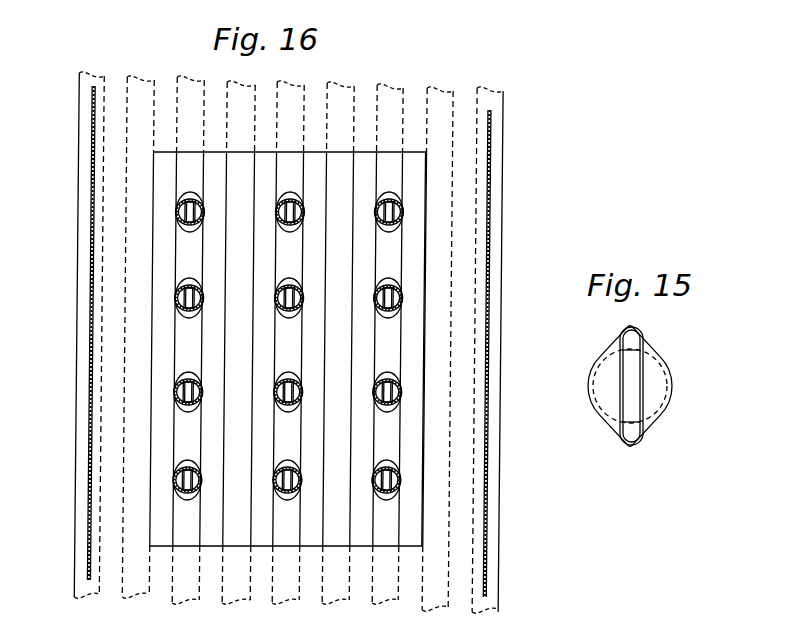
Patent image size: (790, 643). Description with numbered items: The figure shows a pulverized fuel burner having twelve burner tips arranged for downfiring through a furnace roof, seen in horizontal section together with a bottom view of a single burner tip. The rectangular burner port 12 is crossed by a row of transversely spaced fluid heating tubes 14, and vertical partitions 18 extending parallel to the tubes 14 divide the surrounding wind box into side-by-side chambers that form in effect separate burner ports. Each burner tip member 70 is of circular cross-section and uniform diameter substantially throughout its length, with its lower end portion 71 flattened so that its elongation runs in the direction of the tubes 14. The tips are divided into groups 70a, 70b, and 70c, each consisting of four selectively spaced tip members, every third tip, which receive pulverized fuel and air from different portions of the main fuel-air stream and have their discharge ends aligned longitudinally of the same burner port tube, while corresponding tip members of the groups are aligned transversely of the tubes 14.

In FIG. 16, the burner port 12 is at (221, 350).
In FIG. 16, the fluid heating tubes 14 is at (390, 83).
In FIG. 16, the vertical partitions 18 is at (490, 246).
In FIG. 16, the burner tip group 70a is at (389, 413).
In FIG. 16, the burner tip group 70b is at (290, 413).
In FIG. 16, the burner tip group 70c is at (190, 413).
In FIG. 15, the burner tip member 70 is at (665, 366).
In FIG. 15, the lower end portion 71 is at (644, 392).